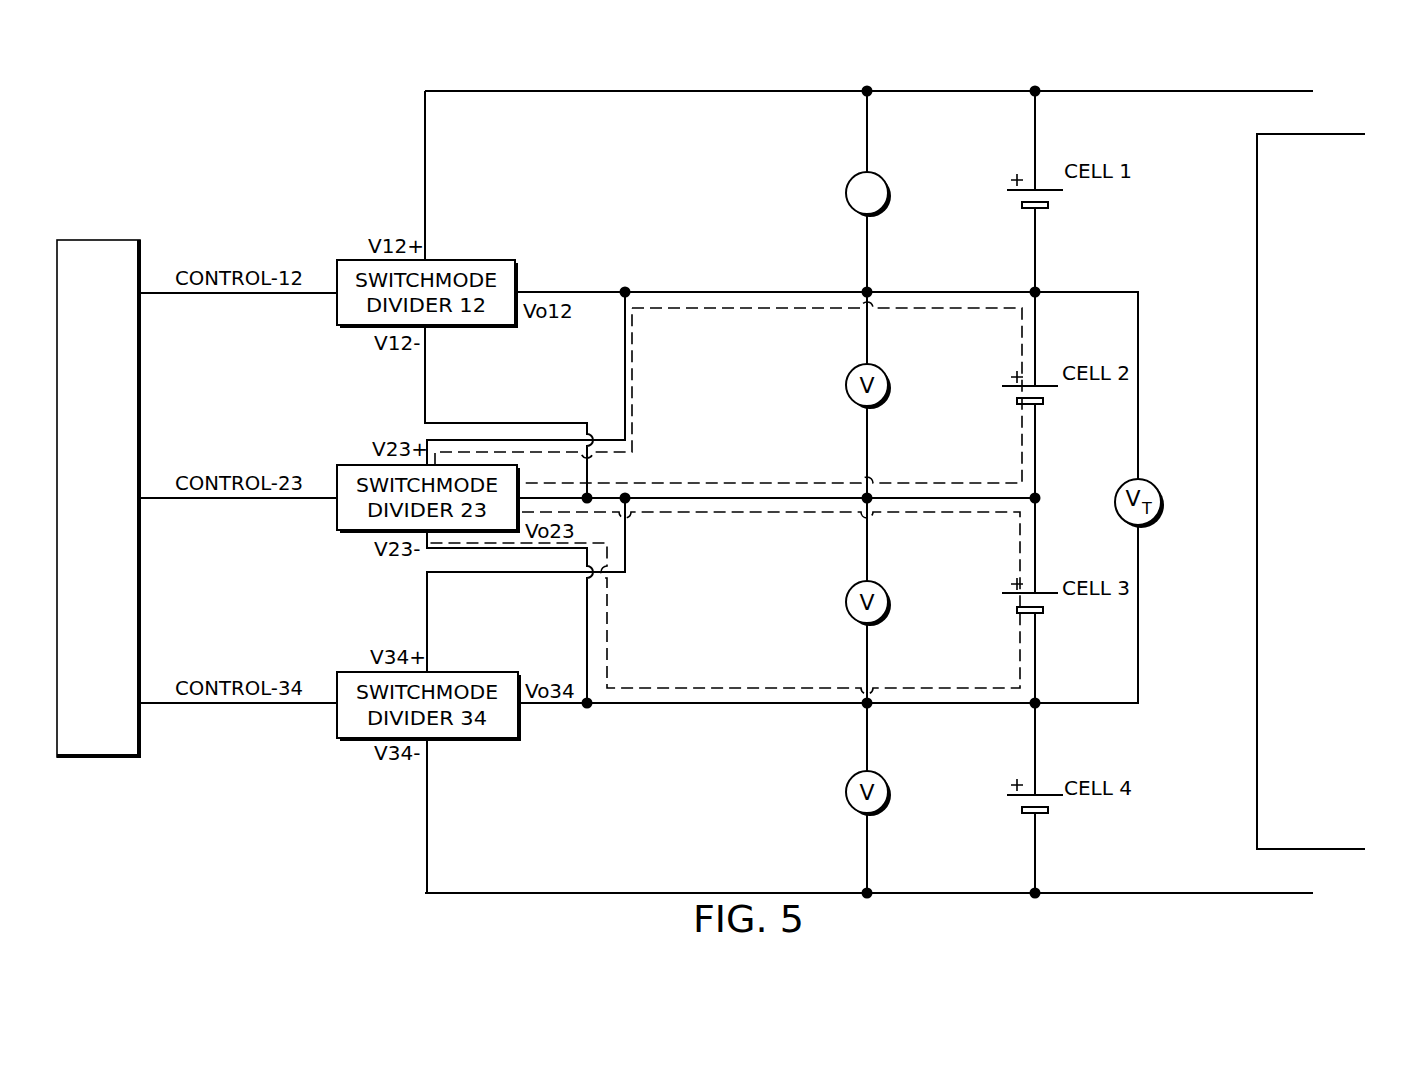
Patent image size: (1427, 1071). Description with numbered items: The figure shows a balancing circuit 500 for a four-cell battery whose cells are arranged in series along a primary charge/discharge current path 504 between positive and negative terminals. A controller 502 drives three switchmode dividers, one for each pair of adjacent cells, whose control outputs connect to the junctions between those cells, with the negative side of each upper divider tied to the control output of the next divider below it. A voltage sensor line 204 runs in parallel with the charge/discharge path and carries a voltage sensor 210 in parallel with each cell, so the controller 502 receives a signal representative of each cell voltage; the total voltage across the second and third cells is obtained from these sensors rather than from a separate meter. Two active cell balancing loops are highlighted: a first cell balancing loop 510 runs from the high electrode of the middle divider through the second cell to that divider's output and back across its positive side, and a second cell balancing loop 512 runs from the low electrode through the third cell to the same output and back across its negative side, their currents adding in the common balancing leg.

The balancing circuit 500 is at (135, 98).
The controller 502 is at (141, 385).
The primary charge/discharge current path 504 is at (1337, 794).
The voltage sensor line 204 is at (867, 146).
The voltage sensor 210 is at (846, 193).
The first cell balancing loop 510 is at (955, 309).
The second cell balancing loop 512 is at (948, 513).